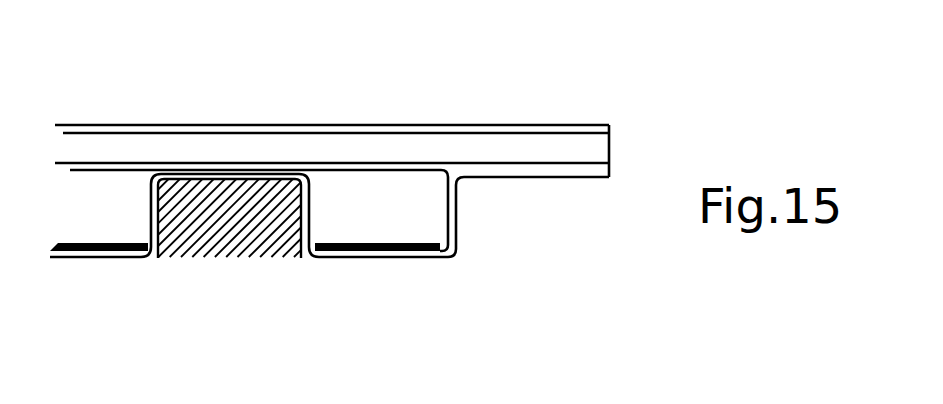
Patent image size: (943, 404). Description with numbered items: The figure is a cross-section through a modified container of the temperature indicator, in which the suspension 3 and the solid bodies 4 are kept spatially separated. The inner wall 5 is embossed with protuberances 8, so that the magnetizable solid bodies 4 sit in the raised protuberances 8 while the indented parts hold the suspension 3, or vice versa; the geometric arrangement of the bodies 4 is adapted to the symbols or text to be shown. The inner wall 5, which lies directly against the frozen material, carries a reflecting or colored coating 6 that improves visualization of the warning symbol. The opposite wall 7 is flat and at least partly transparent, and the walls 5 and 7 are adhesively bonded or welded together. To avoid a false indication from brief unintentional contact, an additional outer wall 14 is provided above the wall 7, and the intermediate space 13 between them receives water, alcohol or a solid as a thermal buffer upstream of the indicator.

The suspension 3 is at (402, 218).
The solid bodies 4 is at (180, 218).
The inner wall 5 is at (125, 257).
The reflecting or colored coating 6 is at (77, 251).
The outer wall 7 is at (590, 163).
The protuberances 8 is at (303, 250).
The intermediate space 13 is at (402, 143).
The outer wall 14 is at (307, 131).